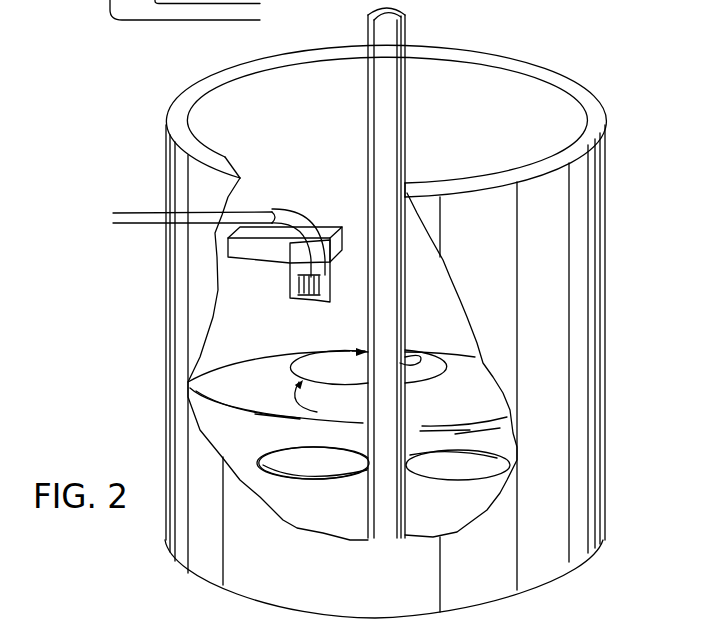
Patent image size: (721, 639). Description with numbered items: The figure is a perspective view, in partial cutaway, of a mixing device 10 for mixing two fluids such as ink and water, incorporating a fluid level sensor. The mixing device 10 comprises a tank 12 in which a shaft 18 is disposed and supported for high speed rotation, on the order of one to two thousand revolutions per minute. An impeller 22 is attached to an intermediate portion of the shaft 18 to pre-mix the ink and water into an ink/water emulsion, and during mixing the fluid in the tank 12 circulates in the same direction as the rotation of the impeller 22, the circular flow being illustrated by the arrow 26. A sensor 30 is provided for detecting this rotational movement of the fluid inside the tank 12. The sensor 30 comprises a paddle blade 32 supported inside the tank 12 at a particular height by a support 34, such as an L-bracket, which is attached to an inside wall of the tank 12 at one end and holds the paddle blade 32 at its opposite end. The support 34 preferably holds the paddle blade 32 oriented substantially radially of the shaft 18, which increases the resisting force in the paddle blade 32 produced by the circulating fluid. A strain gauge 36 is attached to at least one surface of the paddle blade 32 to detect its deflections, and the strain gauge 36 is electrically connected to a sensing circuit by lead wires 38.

The mixing device 10 is at (557, 233).
The tank 12 is at (182, 107).
The shaft 18 is at (390, 410).
The impeller 22 is at (480, 467).
The arrow 26 is at (378, 384).
The sensor 30 is at (300, 196).
The paddle blade 32 is at (292, 265).
The support 34 is at (243, 253).
The strain gauge 36 is at (297, 295).
The lead wires 38 is at (145, 213).